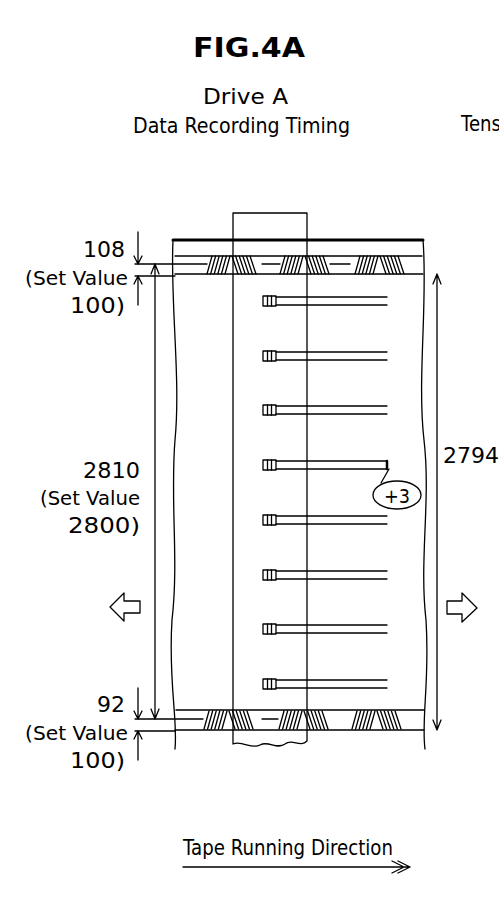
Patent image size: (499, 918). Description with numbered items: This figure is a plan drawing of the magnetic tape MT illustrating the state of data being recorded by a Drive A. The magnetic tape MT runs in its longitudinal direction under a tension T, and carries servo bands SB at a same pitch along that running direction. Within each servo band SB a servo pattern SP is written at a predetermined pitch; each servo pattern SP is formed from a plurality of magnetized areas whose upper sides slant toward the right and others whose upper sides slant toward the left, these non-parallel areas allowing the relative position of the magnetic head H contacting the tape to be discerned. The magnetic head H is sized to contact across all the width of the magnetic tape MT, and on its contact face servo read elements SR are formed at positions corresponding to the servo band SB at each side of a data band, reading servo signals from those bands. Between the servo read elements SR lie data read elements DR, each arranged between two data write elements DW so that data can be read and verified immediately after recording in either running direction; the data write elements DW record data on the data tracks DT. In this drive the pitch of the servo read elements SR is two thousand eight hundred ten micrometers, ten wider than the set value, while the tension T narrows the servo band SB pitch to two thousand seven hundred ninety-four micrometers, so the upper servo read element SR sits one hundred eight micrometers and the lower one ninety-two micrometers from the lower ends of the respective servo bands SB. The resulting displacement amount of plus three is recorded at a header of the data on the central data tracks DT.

The magnetic tape MT is at (197, 240).
The magnetic head H is at (309, 232).
The servo read element SR is at (272, 272).
The servo band SB is at (414, 264).
The servo pattern SP is at (355, 277).
The data track DT is at (362, 463).
The data write element DW is at (262, 463).
The data read element DR is at (267, 471).
The tension T is at (295, 631).